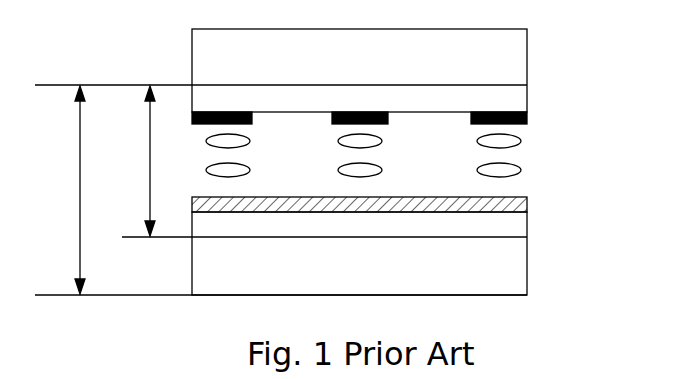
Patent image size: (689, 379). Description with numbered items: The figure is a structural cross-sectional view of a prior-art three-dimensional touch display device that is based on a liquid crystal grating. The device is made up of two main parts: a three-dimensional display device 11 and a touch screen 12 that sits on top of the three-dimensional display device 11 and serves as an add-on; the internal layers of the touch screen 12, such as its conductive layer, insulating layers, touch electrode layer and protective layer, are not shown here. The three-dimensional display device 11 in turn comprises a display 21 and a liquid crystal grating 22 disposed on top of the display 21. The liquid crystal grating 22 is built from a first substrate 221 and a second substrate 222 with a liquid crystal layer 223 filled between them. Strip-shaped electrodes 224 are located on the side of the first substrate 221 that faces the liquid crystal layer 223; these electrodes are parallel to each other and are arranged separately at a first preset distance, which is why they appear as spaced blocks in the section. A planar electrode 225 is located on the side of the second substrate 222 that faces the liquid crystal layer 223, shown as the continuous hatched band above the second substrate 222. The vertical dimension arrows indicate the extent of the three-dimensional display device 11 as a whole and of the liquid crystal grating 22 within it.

The 3D display device 11 is at (62, 190).
The touch screen 12 is at (191, 55).
The display 21 is at (192, 268).
The liquid crystal grating 22 is at (132, 161).
The first substrate 221 is at (527, 97).
The second substrate 222 is at (527, 225).
The liquid crystal layer 223 is at (518, 167).
The strip-shaped electrodes 224 is at (527, 118).
The planar electrode 225 is at (527, 202).